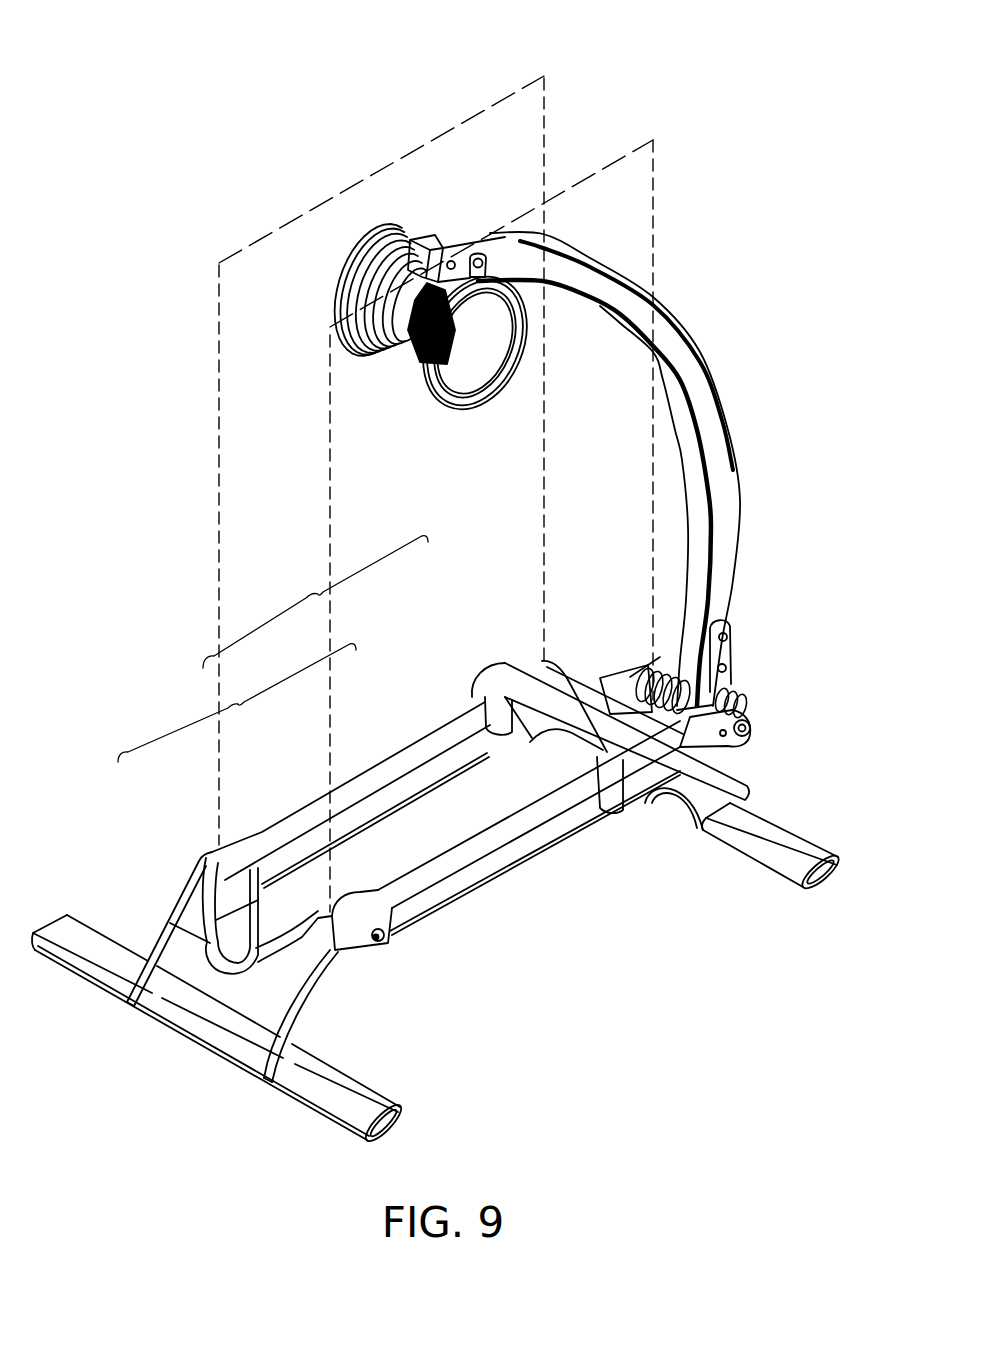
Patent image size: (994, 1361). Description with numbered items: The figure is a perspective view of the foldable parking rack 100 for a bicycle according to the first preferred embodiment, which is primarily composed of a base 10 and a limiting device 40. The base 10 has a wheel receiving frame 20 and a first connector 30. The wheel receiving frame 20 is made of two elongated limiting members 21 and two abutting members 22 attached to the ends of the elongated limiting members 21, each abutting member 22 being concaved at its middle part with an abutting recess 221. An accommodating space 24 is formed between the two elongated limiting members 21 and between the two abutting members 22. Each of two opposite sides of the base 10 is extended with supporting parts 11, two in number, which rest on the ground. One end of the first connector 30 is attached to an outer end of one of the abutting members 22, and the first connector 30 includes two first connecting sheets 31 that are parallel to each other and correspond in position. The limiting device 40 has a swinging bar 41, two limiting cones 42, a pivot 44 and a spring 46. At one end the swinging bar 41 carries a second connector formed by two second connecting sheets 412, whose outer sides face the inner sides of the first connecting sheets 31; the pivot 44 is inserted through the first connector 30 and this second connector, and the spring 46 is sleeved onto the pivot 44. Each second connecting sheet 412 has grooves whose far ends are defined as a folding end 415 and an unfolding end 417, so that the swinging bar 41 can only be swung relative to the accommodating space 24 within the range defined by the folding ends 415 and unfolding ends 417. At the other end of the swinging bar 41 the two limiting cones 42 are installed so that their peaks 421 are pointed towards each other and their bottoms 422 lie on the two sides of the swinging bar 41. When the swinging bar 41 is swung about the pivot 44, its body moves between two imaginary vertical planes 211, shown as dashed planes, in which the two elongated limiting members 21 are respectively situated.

The foldable parking rack 100 is at (111, 114).
The base 10 is at (437, 841).
The supporting part 11 is at (723, 845).
The wheel receiving frame 20 is at (399, 863).
The elongated limiting member 21 is at (382, 764).
The imaginary vertical plane 211 is at (520, 87).
The abutting member 22 is at (138, 918).
The abutting recess 221 is at (238, 968).
The accommodating space 24 is at (442, 823).
The first connector 30 is at (560, 652).
The first connecting sheet 31 is at (633, 688).
The limiting device 40 is at (690, 268).
The swinging bar 41 is at (723, 408).
The second connecting sheet 412 is at (655, 655).
The folding end 415 is at (752, 695).
The unfolding end 417 is at (752, 746).
The limiting cone 42 is at (354, 341).
The peak 421 is at (407, 343).
The bottom 422 is at (340, 270).
The pivot 44 is at (750, 705).
The spring 46 is at (670, 665).